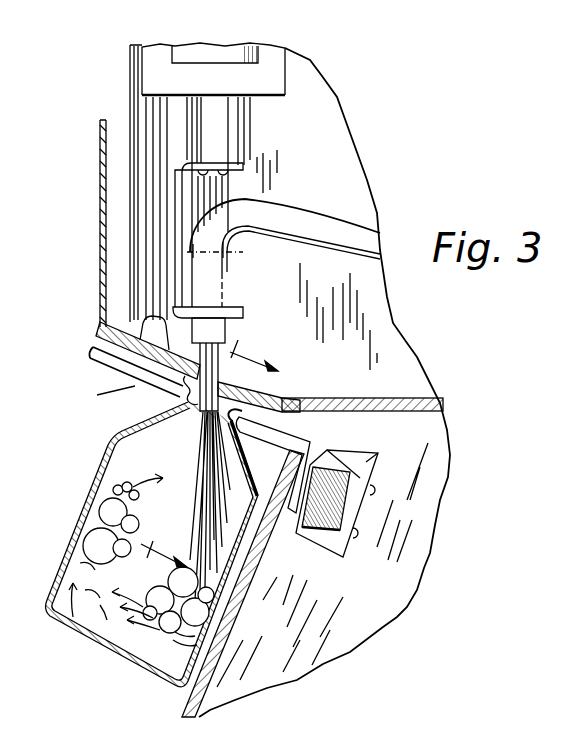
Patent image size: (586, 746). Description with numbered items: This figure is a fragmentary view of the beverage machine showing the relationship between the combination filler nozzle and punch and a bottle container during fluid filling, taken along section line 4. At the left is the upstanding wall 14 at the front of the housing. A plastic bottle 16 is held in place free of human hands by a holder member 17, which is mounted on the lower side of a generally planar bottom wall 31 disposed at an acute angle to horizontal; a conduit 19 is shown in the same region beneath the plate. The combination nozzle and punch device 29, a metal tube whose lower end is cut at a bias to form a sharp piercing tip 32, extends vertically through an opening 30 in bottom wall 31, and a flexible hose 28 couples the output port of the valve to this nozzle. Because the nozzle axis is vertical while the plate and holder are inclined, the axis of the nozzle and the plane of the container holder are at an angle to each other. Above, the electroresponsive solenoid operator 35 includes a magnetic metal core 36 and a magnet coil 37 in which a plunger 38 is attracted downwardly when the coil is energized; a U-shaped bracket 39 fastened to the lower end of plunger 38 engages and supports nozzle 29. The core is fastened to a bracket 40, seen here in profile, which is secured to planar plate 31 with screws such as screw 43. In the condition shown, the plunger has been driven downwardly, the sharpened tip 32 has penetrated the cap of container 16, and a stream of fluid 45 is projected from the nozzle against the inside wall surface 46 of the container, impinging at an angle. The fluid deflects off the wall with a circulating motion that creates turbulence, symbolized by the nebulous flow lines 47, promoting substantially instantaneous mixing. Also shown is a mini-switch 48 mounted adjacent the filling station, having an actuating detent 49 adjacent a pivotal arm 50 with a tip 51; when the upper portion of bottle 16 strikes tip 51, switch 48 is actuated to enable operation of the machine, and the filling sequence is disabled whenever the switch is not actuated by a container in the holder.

The section line 4- 4 is at (209, 445).
The upstanding wall 14 is at (100, 150).
The bottle 16 is at (105, 485).
The holder member 17 is at (135, 386).
The conduit 19 is at (93, 347).
The flexible hose 28 is at (287, 223).
The combination nozzle and punch device 29 is at (185, 402).
The opening 30 is at (243, 382).
The bottom wall 31 is at (100, 330).
The sharp piercing tip 32 is at (197, 407).
The electroresponsive solenoid operator 35 is at (308, 57).
The magnetic metal core 36 is at (285, 80).
The magnet coil 37 is at (227, 33).
The plunger 38 is at (215, 130).
The U-shaped bracket 39 is at (180, 193).
The bracket 40 is at (130, 73).
The screw 43 is at (142, 322).
The stream of fluid 45 is at (207, 497).
The inside wall surface 46 is at (203, 613).
The nebulous flow lines 47 is at (137, 633).
The mini-switch 48 is at (316, 556).
The actuating detent 49 is at (310, 463).
The pivotal arm 50 is at (310, 437).
The tip 51 is at (309, 397).